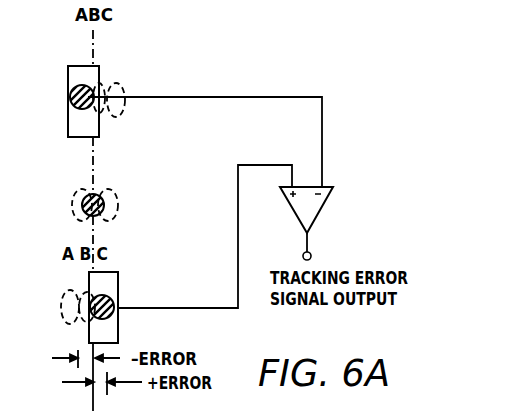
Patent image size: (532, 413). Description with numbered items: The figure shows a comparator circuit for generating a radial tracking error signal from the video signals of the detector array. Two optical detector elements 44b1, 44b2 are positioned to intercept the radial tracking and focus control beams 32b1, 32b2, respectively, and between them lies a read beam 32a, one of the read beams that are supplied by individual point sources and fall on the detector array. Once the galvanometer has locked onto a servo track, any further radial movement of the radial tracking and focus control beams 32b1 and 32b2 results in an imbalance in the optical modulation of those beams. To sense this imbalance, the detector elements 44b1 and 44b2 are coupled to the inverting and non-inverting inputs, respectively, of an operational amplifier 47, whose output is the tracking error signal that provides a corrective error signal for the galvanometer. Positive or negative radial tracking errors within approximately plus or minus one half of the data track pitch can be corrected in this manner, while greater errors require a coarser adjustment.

The detector element 44b1 is at (68, 75).
The radial tracking and focus control beam 32b1 is at (99, 115).
The read beam 32a is at (103, 191).
The detector element 44b2 is at (119, 272).
The radial tracking and focus control beam 32b2 is at (119, 327).
The operational amplifier 47 is at (323, 220).